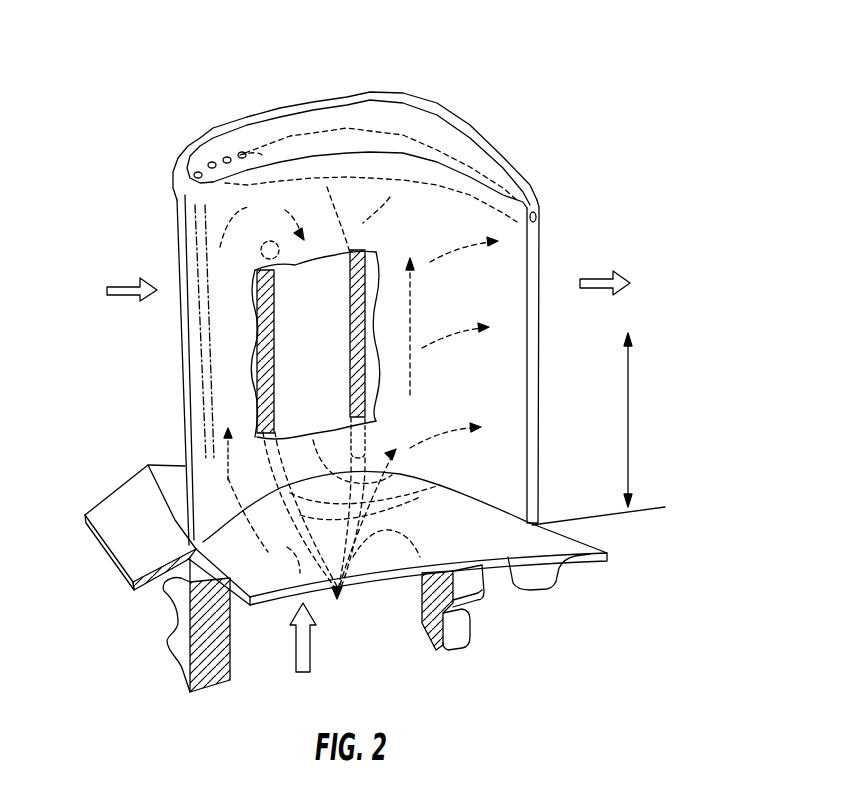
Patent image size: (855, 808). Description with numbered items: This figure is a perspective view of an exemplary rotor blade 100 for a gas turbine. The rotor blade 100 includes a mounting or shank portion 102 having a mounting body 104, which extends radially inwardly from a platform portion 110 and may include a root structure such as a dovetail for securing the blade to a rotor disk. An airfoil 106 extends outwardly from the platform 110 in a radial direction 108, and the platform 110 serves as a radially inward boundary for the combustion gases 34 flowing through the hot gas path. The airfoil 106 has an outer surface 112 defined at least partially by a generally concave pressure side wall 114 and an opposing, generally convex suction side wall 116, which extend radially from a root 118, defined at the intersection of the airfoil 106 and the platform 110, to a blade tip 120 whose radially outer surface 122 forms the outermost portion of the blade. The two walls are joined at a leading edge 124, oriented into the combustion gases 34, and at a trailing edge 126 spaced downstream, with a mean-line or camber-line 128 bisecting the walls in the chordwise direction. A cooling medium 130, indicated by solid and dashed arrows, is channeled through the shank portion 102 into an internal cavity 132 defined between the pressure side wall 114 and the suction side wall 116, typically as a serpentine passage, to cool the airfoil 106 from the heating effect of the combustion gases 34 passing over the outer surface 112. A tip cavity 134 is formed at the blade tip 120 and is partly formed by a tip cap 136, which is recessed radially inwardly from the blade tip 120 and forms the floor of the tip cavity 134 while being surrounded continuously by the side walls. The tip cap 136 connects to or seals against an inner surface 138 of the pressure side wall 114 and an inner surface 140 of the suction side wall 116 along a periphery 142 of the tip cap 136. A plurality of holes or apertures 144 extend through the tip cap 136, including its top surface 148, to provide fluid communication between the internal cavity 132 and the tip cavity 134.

The rotor blade 100 is at (602, 138).
The mounting or shank portion 102 is at (160, 665).
The mounting body 104 is at (210, 682).
The airfoil 106 is at (106, 194).
The radial direction 108 is at (630, 417).
The platform portion 110 is at (533, 537).
The outer surface 112 is at (493, 360).
The pressure side wall 114 is at (225, 350).
The suction side wall 116 is at (223, 307).
The root 118 is at (487, 510).
The blade tip 120 is at (440, 190).
The radially outer surface 122 is at (193, 140).
The leading edge 124 is at (190, 432).
The trailing edge 126 is at (550, 308).
The camber-line 128 is at (260, 140).
The cooling medium 130 is at (370, 667).
The internal cavity 132 is at (328, 357).
The tip cavity 134 is at (391, 105).
The tip cap 136 is at (415, 158).
The inner surface of pressure side wall 138 is at (260, 157).
The inner surface of suction side wall 140 is at (477, 157).
The periphery of tip cap 142 is at (362, 148).
The holes or apertures 144 is at (242, 150).
The top surface of tip cap 148 is at (308, 150).
The combustion gases 34 is at (120, 284).